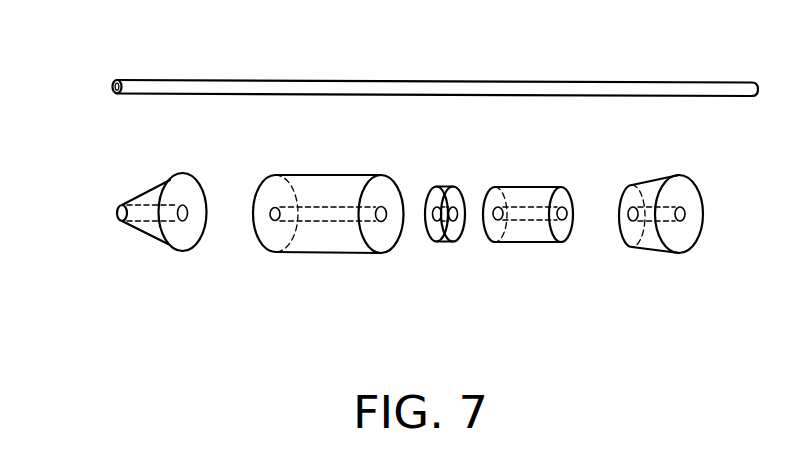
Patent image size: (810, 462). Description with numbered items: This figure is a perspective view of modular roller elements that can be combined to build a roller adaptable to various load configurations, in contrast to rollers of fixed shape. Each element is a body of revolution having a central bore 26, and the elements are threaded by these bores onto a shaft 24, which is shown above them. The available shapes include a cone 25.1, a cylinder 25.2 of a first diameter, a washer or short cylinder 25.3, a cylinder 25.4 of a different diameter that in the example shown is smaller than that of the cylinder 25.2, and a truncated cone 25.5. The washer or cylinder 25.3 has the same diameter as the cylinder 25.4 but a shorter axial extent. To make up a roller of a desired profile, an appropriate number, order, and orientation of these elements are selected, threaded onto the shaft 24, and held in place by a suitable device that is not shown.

The shaft 24 is at (717, 82).
The cone 25.1 is at (143, 233).
The cylinder of a first diameter 25.2 is at (320, 255).
The washer or cylinder 25.3 is at (453, 242).
The cylinder of a different diameter 25.4 is at (530, 243).
The truncated cone 25.5 is at (684, 253).
The central bore 26 is at (188, 213).